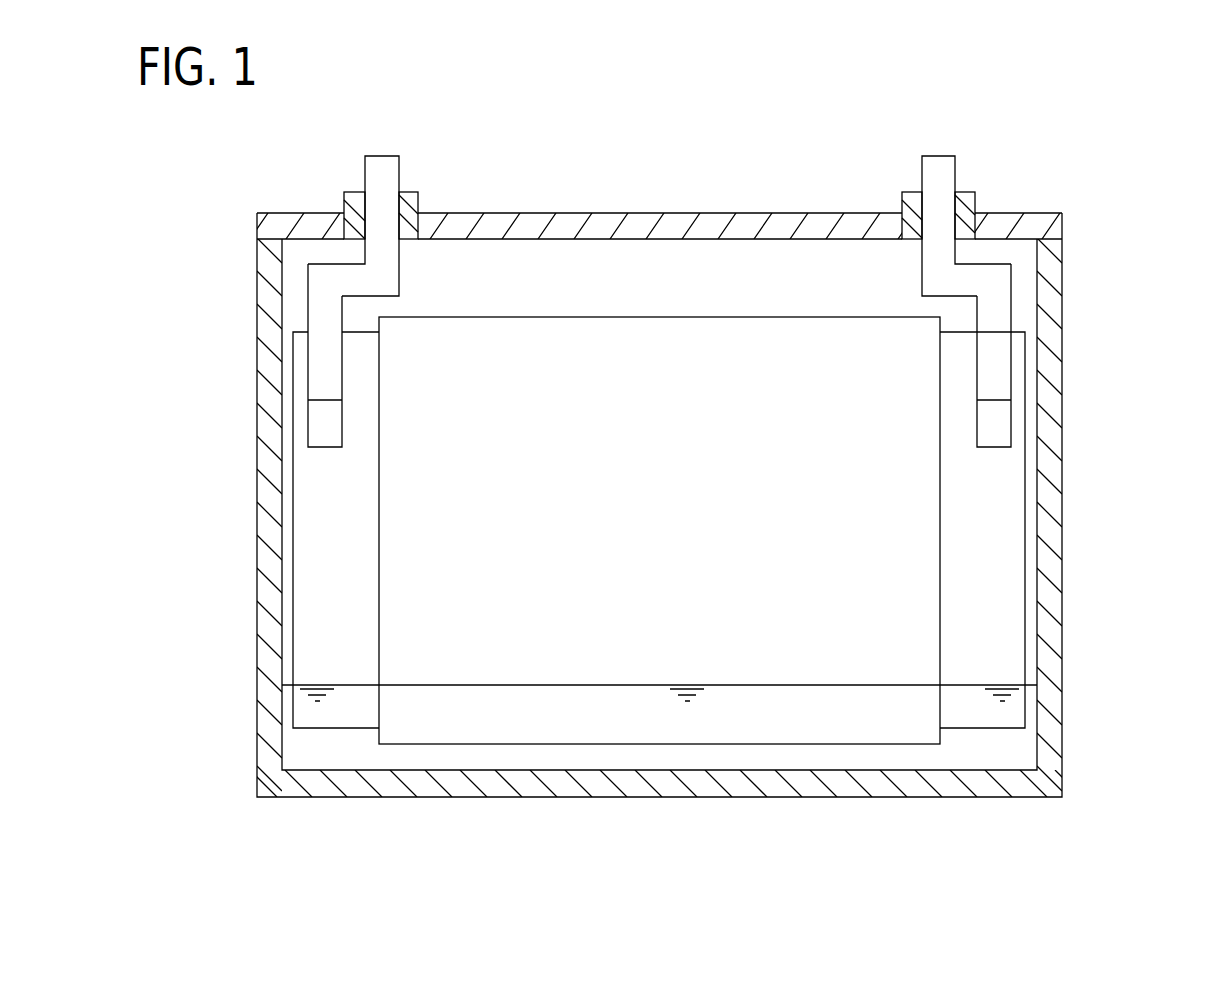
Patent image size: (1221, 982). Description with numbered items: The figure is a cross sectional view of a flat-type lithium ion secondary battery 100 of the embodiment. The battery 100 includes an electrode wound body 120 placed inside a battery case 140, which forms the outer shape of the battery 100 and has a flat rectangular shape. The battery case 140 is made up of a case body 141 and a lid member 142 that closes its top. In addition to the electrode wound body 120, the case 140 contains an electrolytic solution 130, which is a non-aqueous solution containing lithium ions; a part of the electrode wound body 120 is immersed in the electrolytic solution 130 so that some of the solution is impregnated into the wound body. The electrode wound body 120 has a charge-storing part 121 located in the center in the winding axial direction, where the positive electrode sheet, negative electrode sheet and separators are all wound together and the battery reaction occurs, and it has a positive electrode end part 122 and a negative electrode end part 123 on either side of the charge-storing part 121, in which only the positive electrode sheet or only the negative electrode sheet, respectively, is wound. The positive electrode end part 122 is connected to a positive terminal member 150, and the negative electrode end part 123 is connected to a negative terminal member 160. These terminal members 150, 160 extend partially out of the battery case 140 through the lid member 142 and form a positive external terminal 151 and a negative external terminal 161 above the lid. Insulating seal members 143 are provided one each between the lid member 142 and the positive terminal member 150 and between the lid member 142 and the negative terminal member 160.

The battery 100 is at (1082, 138).
The electrode wound body 120 is at (785, 622).
The charge-storing part 121 is at (555, 622).
The positive electrode end part 122 is at (992, 492).
The negative electrode end part 123 is at (320, 533).
The electrolytic solution 130 is at (1022, 748).
The battery case 140 is at (1156, 183).
The case body 141 is at (1058, 265).
The lid member 142 is at (1052, 222).
The insulating seal member 143 is at (404, 191).
The positive terminal member 150 is at (992, 310).
The positive external terminal 151 is at (937, 160).
The negative terminal member 160 is at (325, 286).
The negative external terminal 161 is at (397, 156).